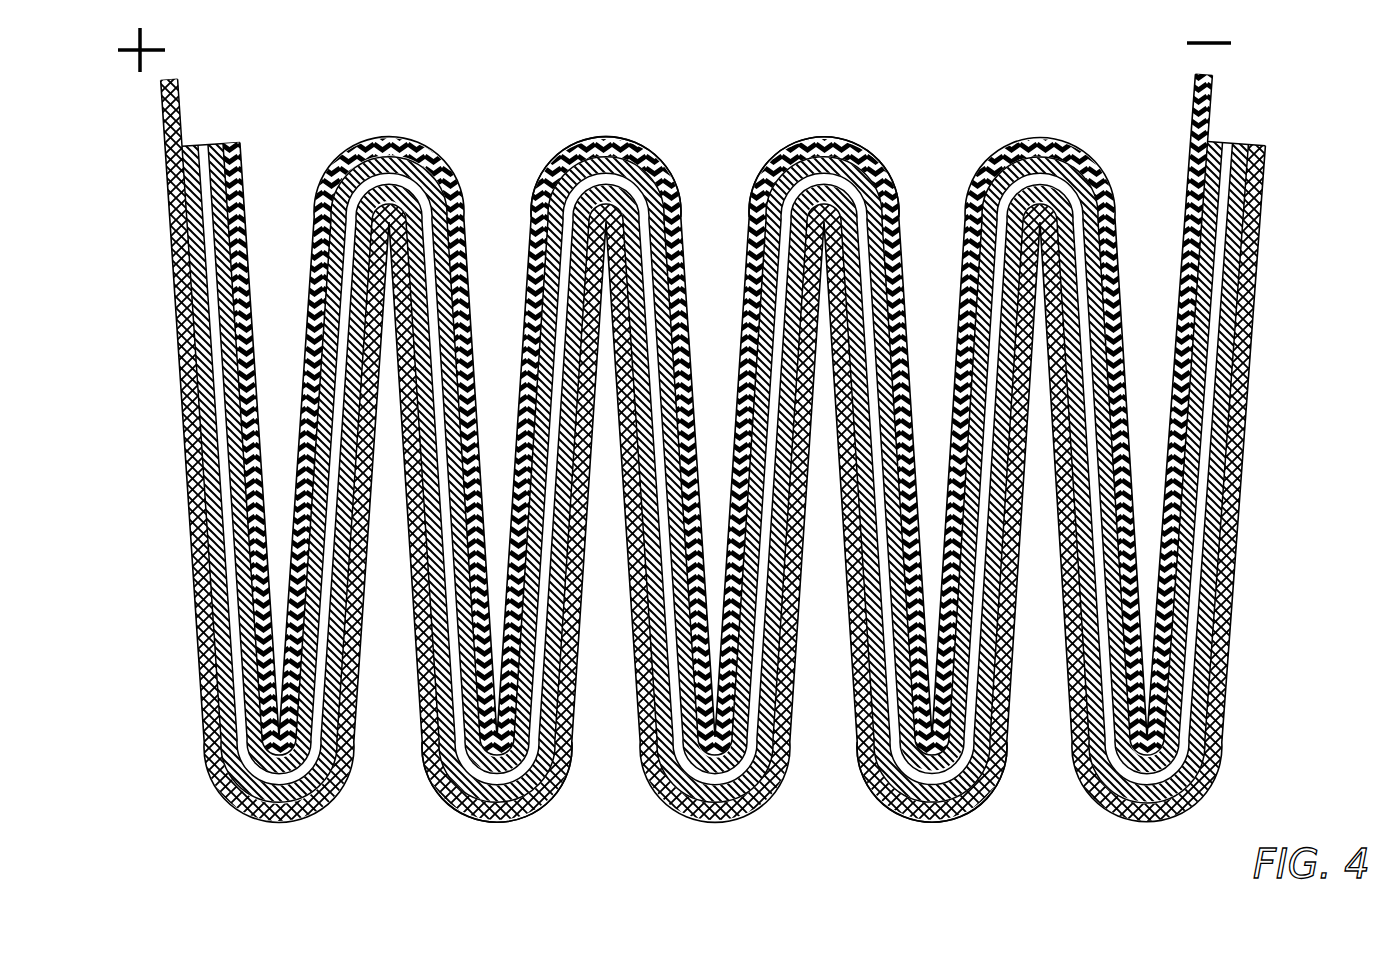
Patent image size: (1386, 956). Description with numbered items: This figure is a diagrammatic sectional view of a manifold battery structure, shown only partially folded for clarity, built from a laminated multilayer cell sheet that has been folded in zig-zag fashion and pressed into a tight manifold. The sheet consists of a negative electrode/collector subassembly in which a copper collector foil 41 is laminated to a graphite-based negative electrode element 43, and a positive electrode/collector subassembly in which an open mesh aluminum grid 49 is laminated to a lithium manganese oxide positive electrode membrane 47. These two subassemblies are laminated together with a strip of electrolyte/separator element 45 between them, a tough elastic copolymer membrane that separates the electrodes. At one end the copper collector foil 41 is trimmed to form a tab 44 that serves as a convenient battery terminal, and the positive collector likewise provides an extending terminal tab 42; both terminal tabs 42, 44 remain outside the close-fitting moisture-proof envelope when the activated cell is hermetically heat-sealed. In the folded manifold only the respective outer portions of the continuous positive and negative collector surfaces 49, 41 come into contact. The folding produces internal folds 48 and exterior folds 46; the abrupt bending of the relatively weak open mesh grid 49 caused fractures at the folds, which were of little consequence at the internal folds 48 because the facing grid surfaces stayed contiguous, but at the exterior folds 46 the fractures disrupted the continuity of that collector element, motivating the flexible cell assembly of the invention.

The copper collector foil 41 is at (240, 210).
The terminal tab 42 is at (162, 102).
The negative electrode element 43 is at (210, 146).
The tab 44 is at (1197, 90).
The electrolyte/separator element 45 is at (1223, 148).
The exterior folds 46 is at (521, 821).
The positive electrode membrane 47 is at (1240, 140).
The internal folds 48 is at (470, 343).
The open mesh aluminum grid 49 is at (1250, 210).